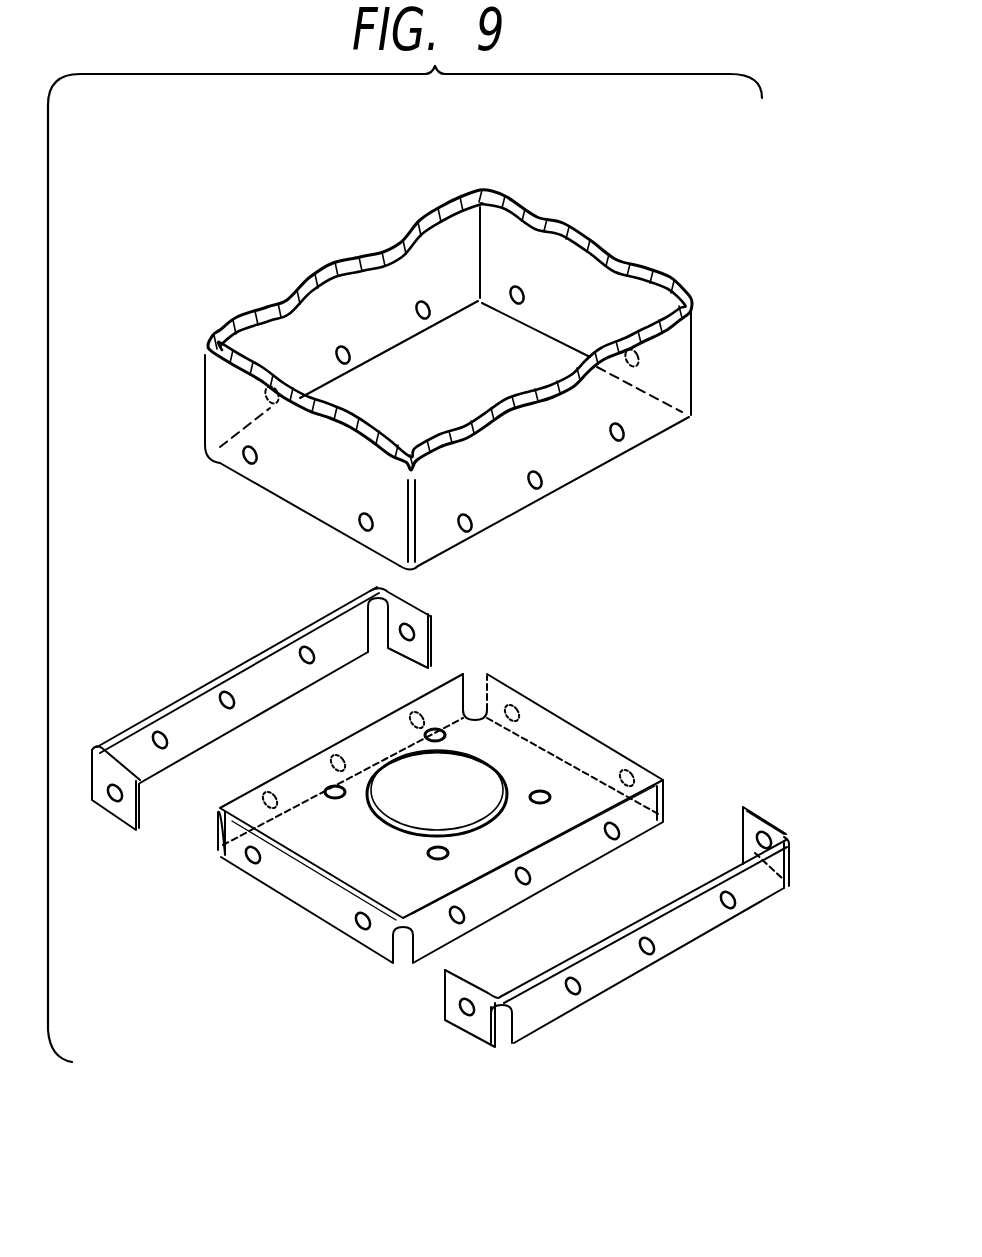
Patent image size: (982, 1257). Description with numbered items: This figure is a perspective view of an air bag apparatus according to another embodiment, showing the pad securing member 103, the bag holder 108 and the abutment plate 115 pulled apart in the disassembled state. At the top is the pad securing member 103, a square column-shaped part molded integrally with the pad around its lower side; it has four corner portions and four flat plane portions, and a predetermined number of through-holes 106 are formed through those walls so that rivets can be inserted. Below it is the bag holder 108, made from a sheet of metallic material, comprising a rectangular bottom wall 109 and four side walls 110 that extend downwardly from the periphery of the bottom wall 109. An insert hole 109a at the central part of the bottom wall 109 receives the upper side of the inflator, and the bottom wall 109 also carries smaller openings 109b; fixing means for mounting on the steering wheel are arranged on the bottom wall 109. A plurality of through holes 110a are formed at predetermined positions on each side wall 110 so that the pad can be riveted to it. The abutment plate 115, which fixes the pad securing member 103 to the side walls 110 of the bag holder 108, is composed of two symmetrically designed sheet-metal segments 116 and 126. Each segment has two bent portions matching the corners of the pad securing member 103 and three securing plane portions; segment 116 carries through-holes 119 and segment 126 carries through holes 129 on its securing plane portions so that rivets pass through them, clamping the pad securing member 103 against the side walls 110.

The pad securing member 103 is at (438, 355).
The through-hole 106 is at (245, 460).
The bag holder 108 is at (424, 792).
The bottom wall 109 is at (441, 797).
The insert hole 109a is at (388, 822).
The small hole 109b is at (450, 853).
The side wall 110 is at (424, 804).
The through hole 110a is at (530, 713).
The abutment plate 115 is at (454, 838).
The segment 116 is at (597, 913).
The through-hole 119 is at (767, 837).
The segment 126 is at (167, 700).
The through hole 129 is at (414, 614).